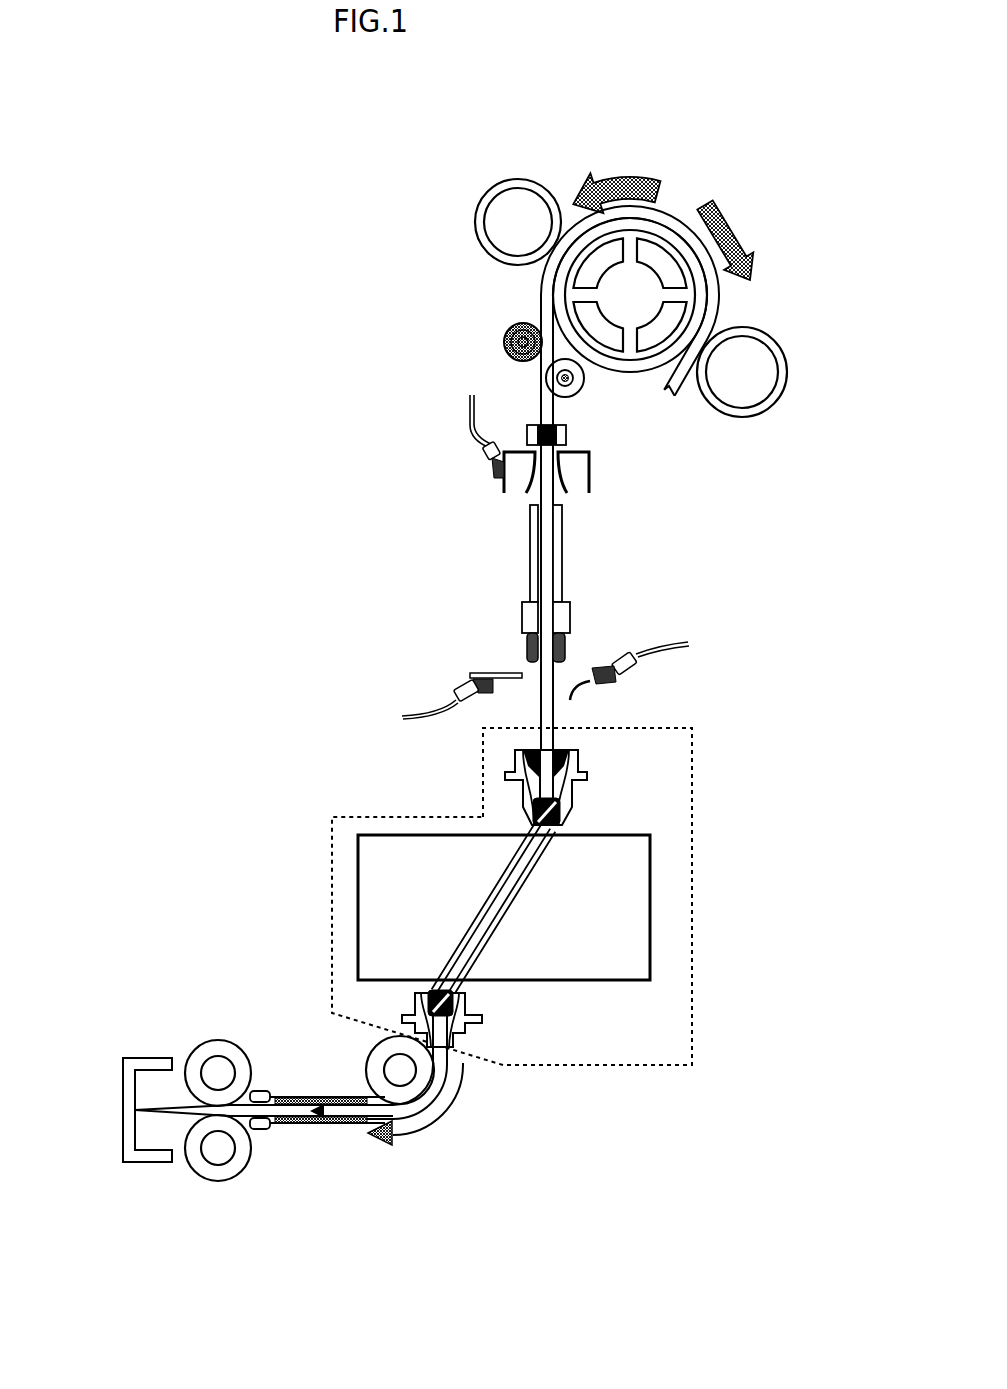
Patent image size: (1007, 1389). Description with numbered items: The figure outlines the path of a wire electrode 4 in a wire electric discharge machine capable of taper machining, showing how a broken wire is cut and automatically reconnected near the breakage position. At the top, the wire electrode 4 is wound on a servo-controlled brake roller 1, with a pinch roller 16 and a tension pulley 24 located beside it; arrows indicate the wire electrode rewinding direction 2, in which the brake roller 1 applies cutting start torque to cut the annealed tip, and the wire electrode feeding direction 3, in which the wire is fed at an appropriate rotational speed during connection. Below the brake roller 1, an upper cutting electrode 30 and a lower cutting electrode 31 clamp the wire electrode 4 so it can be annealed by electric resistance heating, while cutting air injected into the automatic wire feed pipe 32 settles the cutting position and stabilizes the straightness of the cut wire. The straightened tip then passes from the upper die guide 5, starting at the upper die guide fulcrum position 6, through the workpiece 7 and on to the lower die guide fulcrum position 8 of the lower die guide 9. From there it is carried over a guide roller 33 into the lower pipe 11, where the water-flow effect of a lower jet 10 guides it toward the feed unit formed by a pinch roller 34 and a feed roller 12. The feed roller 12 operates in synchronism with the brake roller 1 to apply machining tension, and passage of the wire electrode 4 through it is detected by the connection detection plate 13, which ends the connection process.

The brake roller 1 is at (618, 378).
The wire electrode rewinding direction 2 is at (728, 207).
The wire electrode feeding direction 3 is at (622, 177).
The wire electrode 4 is at (548, 292).
The upper die guide 5 is at (520, 768).
The upper die guide fulcrum position 6 is at (533, 815).
The workpiece 7 is at (357, 842).
The lower die guide fulcrum position 8 is at (437, 998).
The lower die guide 9 is at (413, 1017).
The lower jet 10 is at (327, 1120).
The lower pipe 11 is at (285, 1128).
The feed roller 12 is at (225, 1183).
The connection detection plate 13 is at (125, 1163).
The pinch roller 16 is at (492, 178).
The tension pulley 24 is at (505, 338).
The upper cutting electrode 30 is at (495, 470).
The lower cutting electrode 31 is at (607, 687).
The automatic wire feed pipe 32 is at (530, 566).
The guide roller 33 is at (370, 1060).
The pinch roller 34 is at (188, 1048).